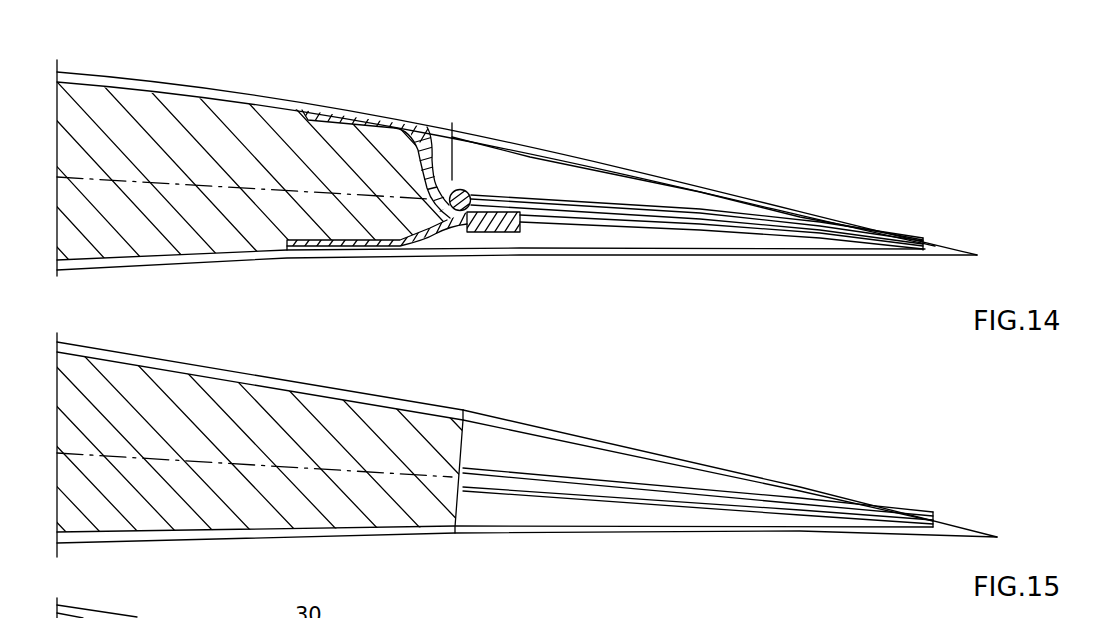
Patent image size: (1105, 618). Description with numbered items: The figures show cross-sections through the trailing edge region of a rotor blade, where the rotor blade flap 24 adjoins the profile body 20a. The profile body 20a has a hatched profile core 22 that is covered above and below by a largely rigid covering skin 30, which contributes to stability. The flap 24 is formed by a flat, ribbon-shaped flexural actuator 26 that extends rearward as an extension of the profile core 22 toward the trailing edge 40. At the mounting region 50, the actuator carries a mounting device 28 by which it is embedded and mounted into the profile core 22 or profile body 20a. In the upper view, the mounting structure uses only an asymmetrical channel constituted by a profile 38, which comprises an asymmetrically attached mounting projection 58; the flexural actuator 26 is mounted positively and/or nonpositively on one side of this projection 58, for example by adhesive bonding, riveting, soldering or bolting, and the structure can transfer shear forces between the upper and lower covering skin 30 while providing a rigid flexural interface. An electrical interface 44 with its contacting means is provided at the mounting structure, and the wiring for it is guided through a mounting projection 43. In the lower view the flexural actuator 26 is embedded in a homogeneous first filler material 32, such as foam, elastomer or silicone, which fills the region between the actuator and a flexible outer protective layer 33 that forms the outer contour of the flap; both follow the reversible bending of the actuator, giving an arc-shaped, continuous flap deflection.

In FIG. 14, the profile body 20a is at (342, 265).
In FIG. 15, the profile body 20a is at (313, 381).
In FIG. 14, the profile core 22 is at (237, 117).
In FIG. 15, the profile core 22 is at (400, 513).
In FIG. 14, the rotor blade flap 24 is at (658, 157).
In FIG. 15, the rotor blade flap 24 is at (672, 442).
In FIG. 14, the flexural actuator 26 is at (663, 203).
In FIG. 15, the flexural actuator 26 is at (663, 503).
In FIG. 14, the mounting device 28 is at (410, 260).
In FIG. 14, the covering skin 30 is at (203, 95).
In FIG. 15, the covering skin 30 is at (350, 388).
In FIG. 14, the first filler material 32 is at (557, 165).
In FIG. 15, the first filler material 32 is at (560, 425).
In FIG. 15, the protective skin 33 is at (602, 438).
In FIG. 14, the profile 38 is at (403, 160).
In FIG. 14, the trailing edge 40 is at (978, 222).
In FIG. 15, the trailing edge 40 is at (977, 530).
In FIG. 14, the mounting projection 43 is at (363, 127).
In FIG. 14, the electrical interface 44 is at (462, 212).
In FIG. 14, the mounting region 50 is at (427, 122).
In FIG. 14, the mounting projection 58 is at (510, 233).